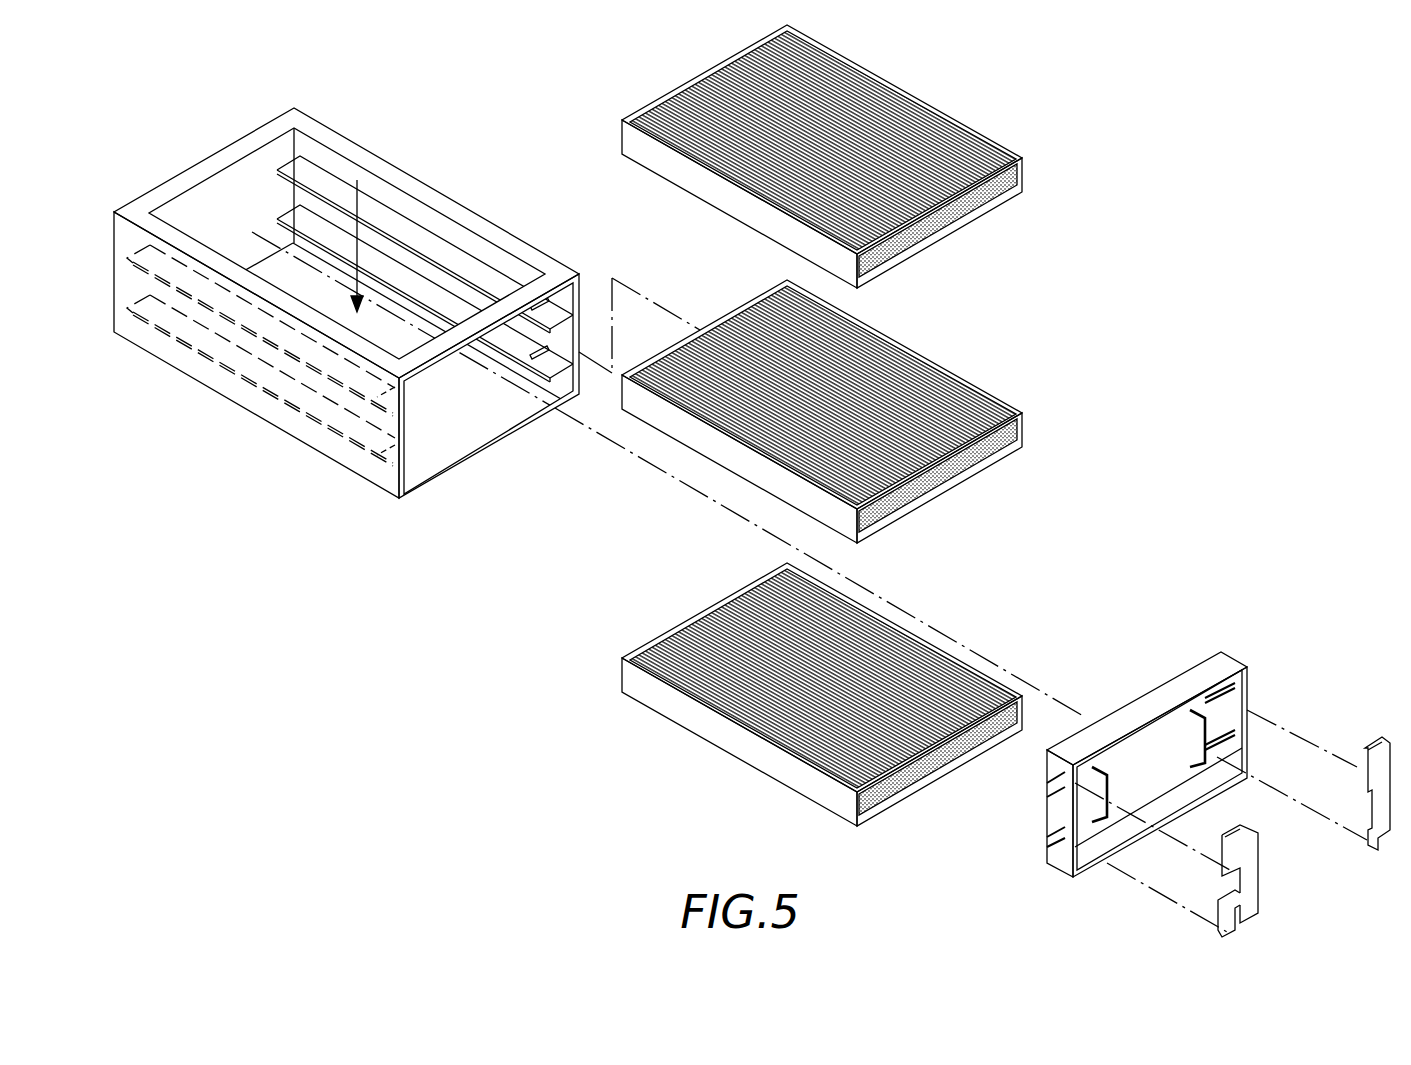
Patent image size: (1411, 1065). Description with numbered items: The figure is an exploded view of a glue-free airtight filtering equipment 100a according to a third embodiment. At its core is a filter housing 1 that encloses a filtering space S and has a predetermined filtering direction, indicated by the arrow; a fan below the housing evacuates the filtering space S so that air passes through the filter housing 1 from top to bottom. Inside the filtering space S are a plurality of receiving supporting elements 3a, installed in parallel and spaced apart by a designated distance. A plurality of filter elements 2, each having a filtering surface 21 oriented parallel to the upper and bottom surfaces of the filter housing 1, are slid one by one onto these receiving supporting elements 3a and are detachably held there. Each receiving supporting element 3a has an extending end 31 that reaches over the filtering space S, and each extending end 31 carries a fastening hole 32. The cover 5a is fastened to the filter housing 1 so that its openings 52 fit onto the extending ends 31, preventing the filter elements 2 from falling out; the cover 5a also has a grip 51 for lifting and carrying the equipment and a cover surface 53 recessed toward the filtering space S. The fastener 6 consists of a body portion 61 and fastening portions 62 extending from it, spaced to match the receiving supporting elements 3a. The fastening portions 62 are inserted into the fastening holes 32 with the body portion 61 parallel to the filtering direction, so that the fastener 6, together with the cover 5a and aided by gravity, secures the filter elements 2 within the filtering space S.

The glue-free airtight filtering equipment 100a is at (1229, 158).
The filter housing 1 is at (346, 338).
The filter element 2 is at (859, 439).
The filtering surface 21 is at (928, 125).
The receiving supporting element 3a is at (440, 253).
The extending end 31 is at (418, 452).
The fastening hole 32 is at (367, 450).
The filtering space S is at (446, 410).
The cover 5a is at (1147, 725).
The grip 51 is at (1203, 743).
The opening 52 is at (1208, 698).
The cover surface 53 is at (1137, 767).
The fastener 6 is at (1304, 839).
The body portion 61 is at (1248, 867).
The fastening portion 62 is at (1271, 913).